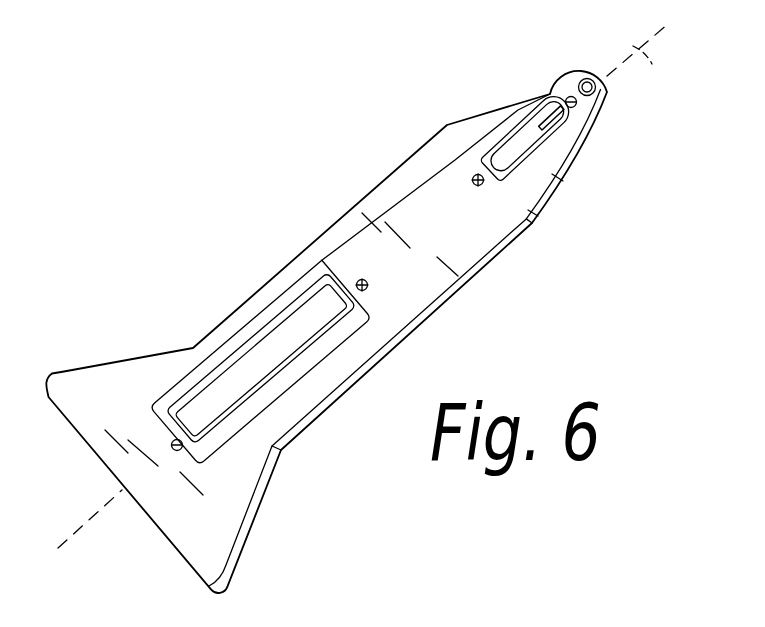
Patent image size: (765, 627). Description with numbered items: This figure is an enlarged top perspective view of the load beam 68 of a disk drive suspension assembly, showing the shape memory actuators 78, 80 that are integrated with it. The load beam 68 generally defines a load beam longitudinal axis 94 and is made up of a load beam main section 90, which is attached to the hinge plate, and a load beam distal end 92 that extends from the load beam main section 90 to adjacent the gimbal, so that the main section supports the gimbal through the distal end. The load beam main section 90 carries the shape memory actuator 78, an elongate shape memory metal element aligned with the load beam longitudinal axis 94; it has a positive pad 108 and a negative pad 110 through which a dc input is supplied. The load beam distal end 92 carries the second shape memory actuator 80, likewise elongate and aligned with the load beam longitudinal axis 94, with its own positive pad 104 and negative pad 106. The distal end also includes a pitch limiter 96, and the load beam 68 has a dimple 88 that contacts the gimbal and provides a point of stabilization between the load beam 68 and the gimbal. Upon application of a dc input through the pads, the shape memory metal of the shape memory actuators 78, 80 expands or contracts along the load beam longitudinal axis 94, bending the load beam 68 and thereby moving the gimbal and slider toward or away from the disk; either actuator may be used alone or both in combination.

The load beam 68 is at (424, 158).
The shape memory actuator 78 is at (297, 348).
The shape memory actuator 80 is at (510, 168).
The dimple 88 is at (584, 78).
The load beam main section 90 is at (313, 393).
The load beam distal end 92 is at (563, 144).
The load beam longitudinal axis 94 is at (649, 64).
The pitch limiter 96 is at (546, 121).
The positive pad 104 is at (486, 187).
The negative pad 106 is at (577, 104).
The positive pad 108 is at (368, 287).
The negative pad 110 is at (178, 451).